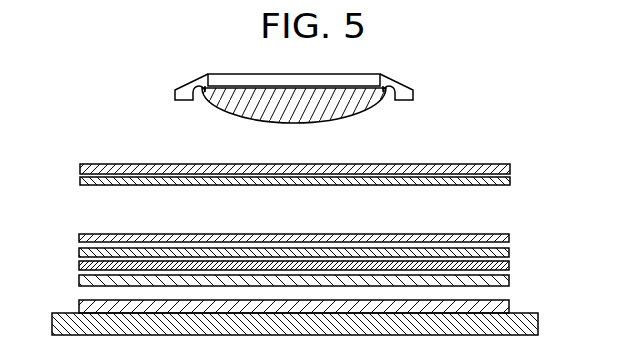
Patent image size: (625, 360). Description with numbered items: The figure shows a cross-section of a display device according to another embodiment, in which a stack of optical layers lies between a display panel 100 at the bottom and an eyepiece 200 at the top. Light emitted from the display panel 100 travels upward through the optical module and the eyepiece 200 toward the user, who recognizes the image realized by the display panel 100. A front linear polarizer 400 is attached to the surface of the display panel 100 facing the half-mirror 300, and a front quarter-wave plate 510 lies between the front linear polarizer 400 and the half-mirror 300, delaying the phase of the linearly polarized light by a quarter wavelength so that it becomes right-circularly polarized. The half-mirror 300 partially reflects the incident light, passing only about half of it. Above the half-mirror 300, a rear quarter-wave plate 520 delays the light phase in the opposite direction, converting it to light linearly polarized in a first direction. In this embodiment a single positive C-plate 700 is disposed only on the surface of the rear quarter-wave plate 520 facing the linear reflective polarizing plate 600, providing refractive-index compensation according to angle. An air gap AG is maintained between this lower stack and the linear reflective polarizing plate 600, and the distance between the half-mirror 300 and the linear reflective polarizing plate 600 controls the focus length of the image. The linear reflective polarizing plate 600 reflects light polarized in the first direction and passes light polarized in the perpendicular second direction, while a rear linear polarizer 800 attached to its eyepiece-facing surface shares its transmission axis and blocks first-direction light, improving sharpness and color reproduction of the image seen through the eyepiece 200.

The eyepiece 200 is at (377, 103).
The rear linear polarizer 800 is at (510, 169).
The linear reflective polarizing plate 600 is at (510, 181).
The air gap AG is at (107, 212).
The positive C-plate 700 is at (79, 238).
The rear quarter-wave plate 520 is at (509, 253).
The half-mirror 300 is at (509, 266).
The front quarter-wave plate 510 is at (509, 282).
The front linear polarizer 400 is at (509, 303).
The display panel 100 is at (538, 332).